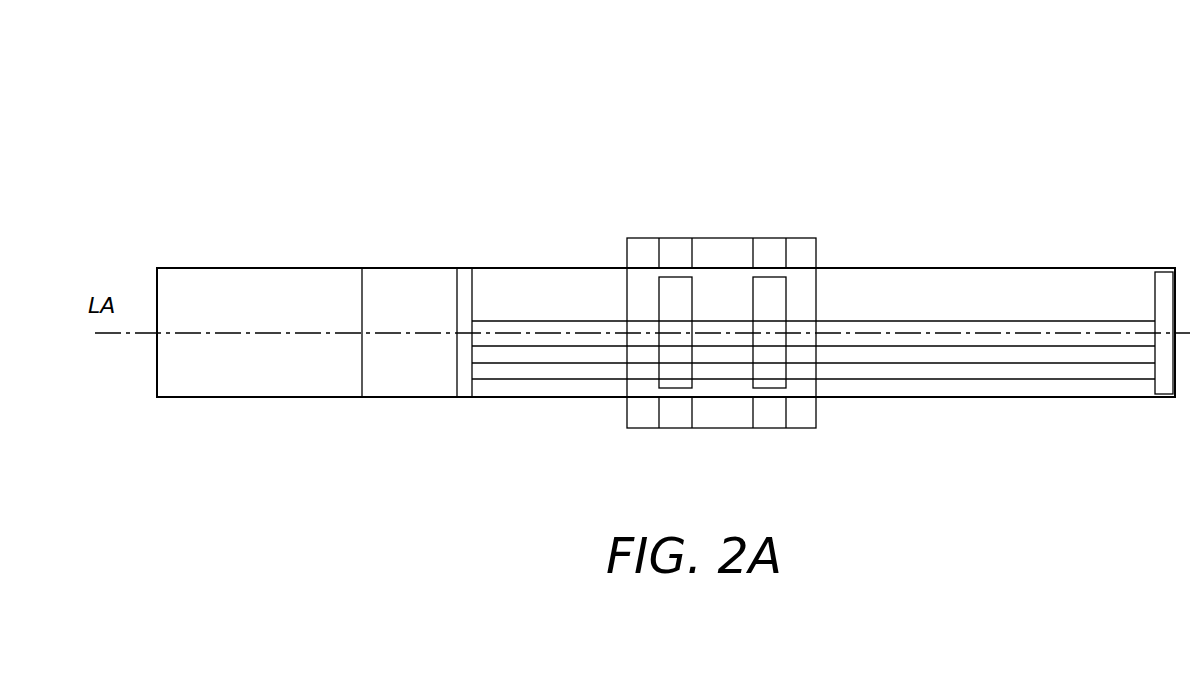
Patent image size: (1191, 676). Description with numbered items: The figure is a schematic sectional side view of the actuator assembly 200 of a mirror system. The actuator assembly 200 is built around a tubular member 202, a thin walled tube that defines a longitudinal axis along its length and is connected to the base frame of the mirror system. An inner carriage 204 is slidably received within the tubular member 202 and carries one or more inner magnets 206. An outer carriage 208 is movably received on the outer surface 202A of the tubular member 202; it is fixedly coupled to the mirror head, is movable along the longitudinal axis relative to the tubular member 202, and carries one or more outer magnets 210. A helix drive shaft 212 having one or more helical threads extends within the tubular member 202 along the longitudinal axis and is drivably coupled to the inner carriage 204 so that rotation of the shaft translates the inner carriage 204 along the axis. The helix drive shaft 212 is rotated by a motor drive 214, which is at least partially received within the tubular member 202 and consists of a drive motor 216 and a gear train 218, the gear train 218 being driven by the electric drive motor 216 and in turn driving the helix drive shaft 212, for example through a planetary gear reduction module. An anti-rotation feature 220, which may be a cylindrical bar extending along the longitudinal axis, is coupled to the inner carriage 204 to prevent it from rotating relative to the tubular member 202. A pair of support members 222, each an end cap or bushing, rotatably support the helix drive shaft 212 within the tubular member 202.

The actuator assembly 200 is at (678, 58).
The tubular member 202 is at (482, 250).
The outer surface 202A is at (520, 268).
The inner carriage 204 is at (627, 302).
The inner magnets 206 is at (786, 300).
The outer carriage 208 is at (647, 238).
The outer magnets 210 is at (692, 254).
The helix drive shaft 212 is at (517, 345).
The motor drive 214 is at (317, 433).
The drive motor 216 is at (272, 340).
The gear train 218 is at (403, 355).
The anti-rotation feature 220 is at (562, 380).
The support members 222 is at (457, 293).